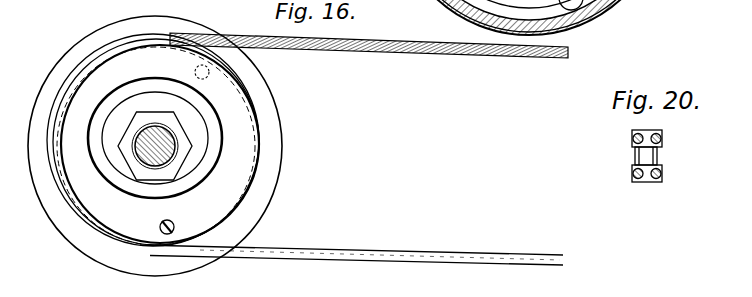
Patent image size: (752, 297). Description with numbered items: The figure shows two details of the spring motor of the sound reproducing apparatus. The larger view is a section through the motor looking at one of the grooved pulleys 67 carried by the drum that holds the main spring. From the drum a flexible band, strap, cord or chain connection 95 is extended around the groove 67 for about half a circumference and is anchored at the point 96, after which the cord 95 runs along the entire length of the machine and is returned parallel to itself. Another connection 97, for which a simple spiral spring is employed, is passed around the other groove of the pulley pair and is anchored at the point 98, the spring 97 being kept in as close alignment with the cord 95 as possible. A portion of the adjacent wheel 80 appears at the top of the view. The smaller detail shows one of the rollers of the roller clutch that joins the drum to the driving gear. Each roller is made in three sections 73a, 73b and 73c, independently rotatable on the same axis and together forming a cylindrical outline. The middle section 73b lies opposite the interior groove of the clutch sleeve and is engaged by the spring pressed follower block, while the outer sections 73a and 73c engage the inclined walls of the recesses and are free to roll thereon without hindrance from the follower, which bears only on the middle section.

In FIG. 16, the grooved pulley 67 is at (258, 153).
In FIG. 16, the drive wheel 80 is at (440, 1).
In FIG. 16, the flexible connection 95 is at (490, 256).
In FIG. 16, the anchoring point 96 is at (206, 78).
In FIG. 16, the spiral spring connection 97 is at (448, 58).
In FIG. 16, the anchoring point 98 is at (176, 227).
In FIG. 20, the outer roller section 73a is at (663, 133).
In FIG. 20, the middle roller section 73b is at (658, 156).
In FIG. 20, the outer roller section 73c is at (663, 179).